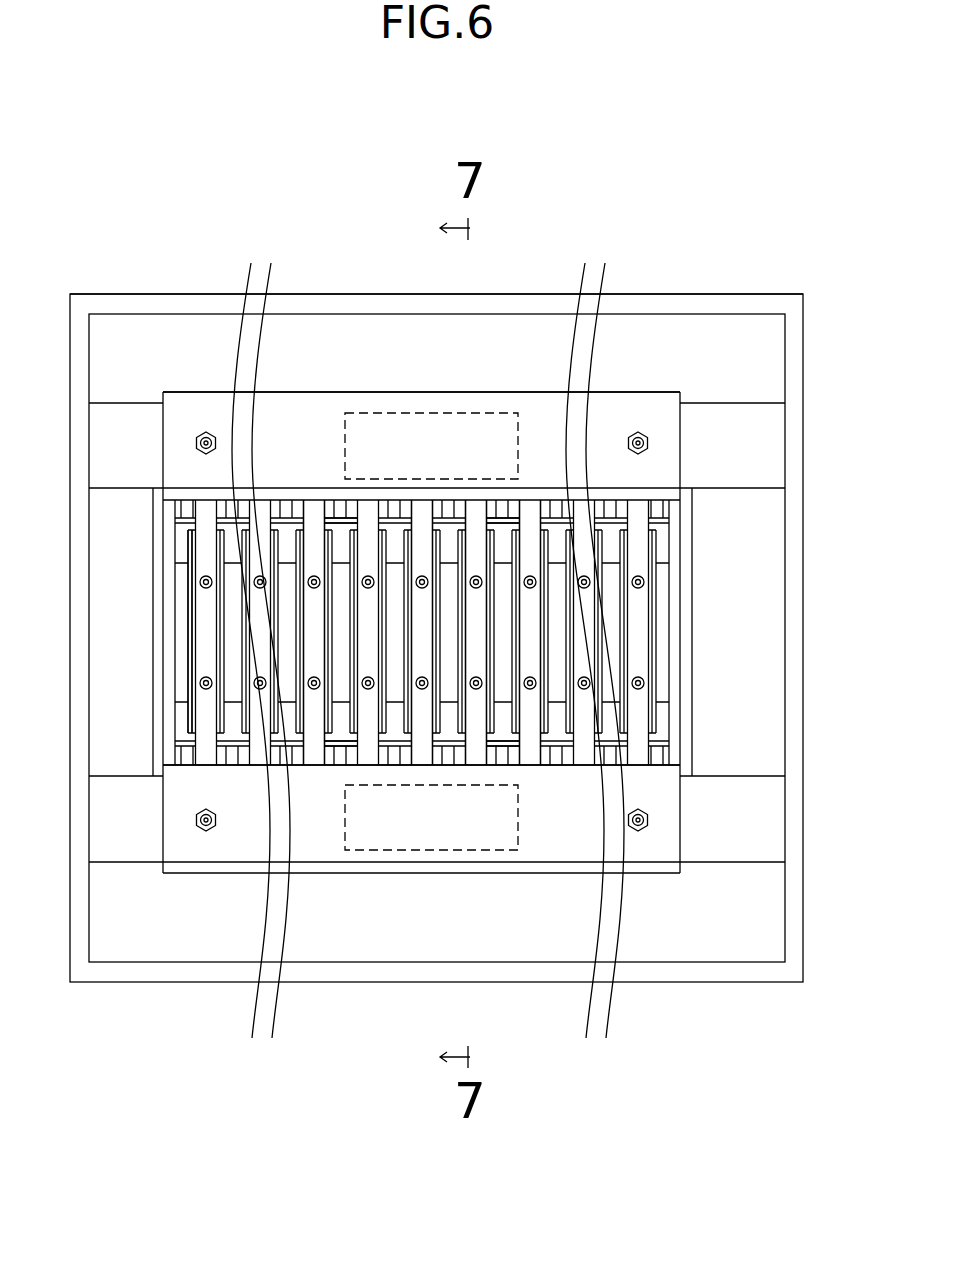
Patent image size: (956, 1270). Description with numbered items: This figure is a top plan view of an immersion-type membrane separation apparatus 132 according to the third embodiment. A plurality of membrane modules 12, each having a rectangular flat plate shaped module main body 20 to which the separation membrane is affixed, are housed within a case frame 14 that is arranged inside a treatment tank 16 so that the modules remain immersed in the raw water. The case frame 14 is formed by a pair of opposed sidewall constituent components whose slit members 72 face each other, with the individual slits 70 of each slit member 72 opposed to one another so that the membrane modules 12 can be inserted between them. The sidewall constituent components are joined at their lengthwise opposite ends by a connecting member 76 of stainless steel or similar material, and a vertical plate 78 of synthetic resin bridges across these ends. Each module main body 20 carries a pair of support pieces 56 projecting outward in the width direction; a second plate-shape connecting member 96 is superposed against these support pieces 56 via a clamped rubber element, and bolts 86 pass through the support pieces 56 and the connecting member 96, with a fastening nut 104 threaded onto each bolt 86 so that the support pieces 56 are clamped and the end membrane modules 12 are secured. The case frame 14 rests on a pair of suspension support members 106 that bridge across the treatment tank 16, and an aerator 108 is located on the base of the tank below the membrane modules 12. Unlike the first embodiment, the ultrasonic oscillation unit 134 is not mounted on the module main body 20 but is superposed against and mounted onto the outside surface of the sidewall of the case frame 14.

The membrane module 12 is at (656, 718).
The case frame 14 is at (697, 538).
The treatment tank 16 is at (733, 300).
The module main body 20 is at (423, 535).
The support piece 56 is at (318, 512).
The slit 70 is at (371, 495).
The slit member 72 is at (234, 752).
The connecting member 76 is at (168, 575).
The vertical plate 78 is at (155, 628).
The bolt 86 is at (206, 431).
The second plate-shape connecting member 96 is at (660, 381).
The fastening nut 104 is at (204, 455).
The suspension support member 106 is at (100, 445).
The aerator 108 is at (186, 682).
The immersion-type membrane separation apparatus 132 is at (808, 292).
The ultrasonic oscillation unit 134 is at (397, 410).